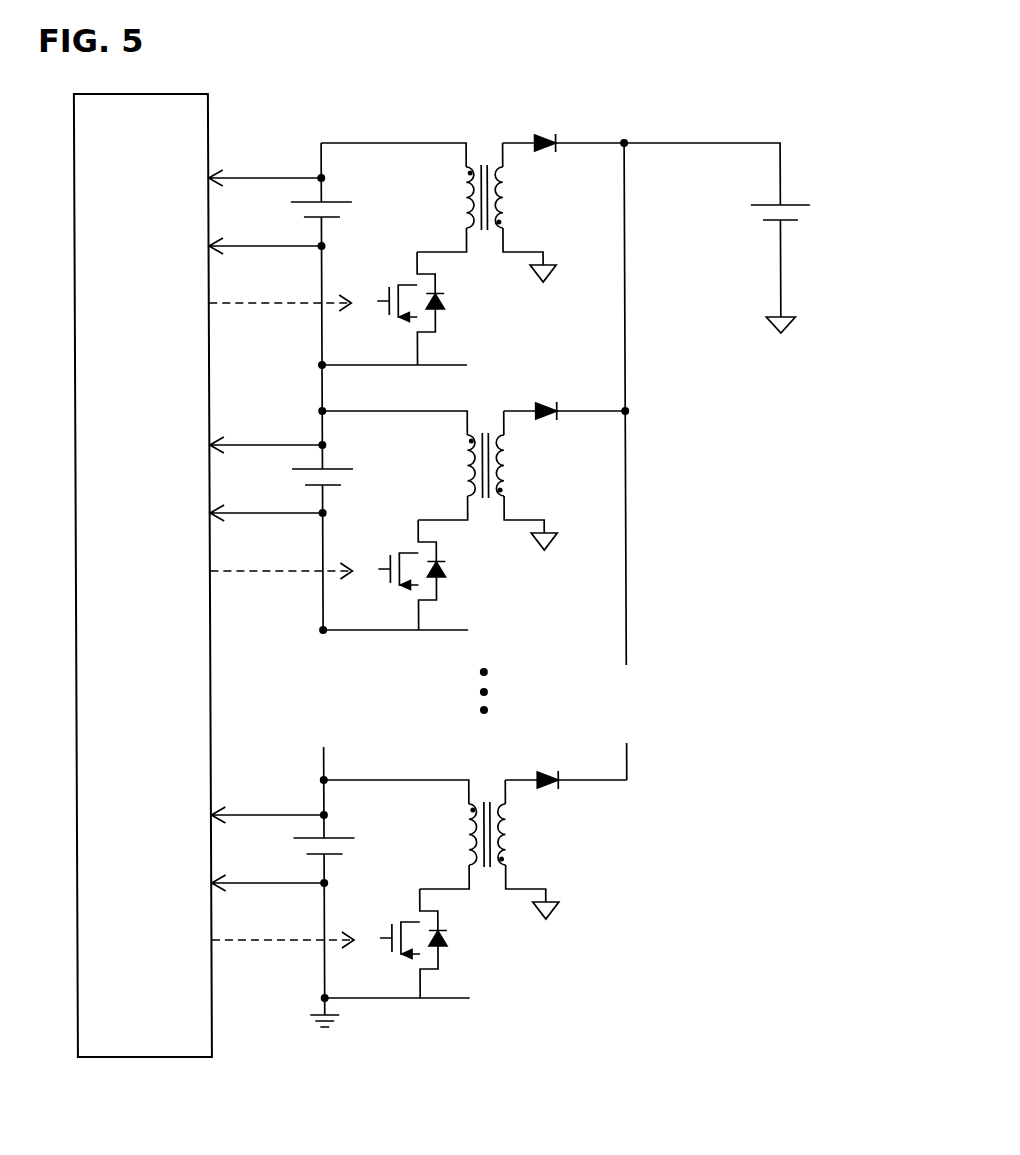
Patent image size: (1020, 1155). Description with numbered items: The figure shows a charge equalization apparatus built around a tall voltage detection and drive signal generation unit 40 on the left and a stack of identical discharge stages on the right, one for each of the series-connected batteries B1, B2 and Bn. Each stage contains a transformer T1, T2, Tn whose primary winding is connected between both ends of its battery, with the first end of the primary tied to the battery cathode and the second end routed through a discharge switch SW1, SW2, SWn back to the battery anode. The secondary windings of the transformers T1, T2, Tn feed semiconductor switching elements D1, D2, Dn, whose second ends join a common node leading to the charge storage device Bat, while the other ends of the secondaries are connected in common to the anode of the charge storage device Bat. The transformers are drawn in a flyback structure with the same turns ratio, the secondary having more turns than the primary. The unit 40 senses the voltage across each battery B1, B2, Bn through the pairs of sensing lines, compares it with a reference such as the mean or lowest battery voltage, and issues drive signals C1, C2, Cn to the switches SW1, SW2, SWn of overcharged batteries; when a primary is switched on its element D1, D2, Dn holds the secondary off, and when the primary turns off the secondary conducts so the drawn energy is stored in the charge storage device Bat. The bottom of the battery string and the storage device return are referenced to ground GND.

The voltage detection and drive signal generation unit 40 is at (208, 120).
The battery B1 is at (340, 212).
The battery B2 is at (340, 476).
The battery Bn is at (340, 845).
The transformer T1 is at (486, 196).
The transformer T2 is at (487, 465).
The transformer Tn is at (487, 832).
The discharge switch SW1 is at (442, 308).
The discharge switch SW2 is at (442, 575).
The discharge switch SWn is at (444, 943).
The semiconductor switching element D1 is at (553, 161).
The semiconductor switching element D2 is at (553, 429).
The semiconductor switching element Dn is at (556, 798).
The drive signal C1 is at (280, 315).
The drive signal C2 is at (281, 583).
The drive signal Cn is at (283, 951).
The charge storage device Bat is at (739, 238).
The ground GND is at (352, 1020).